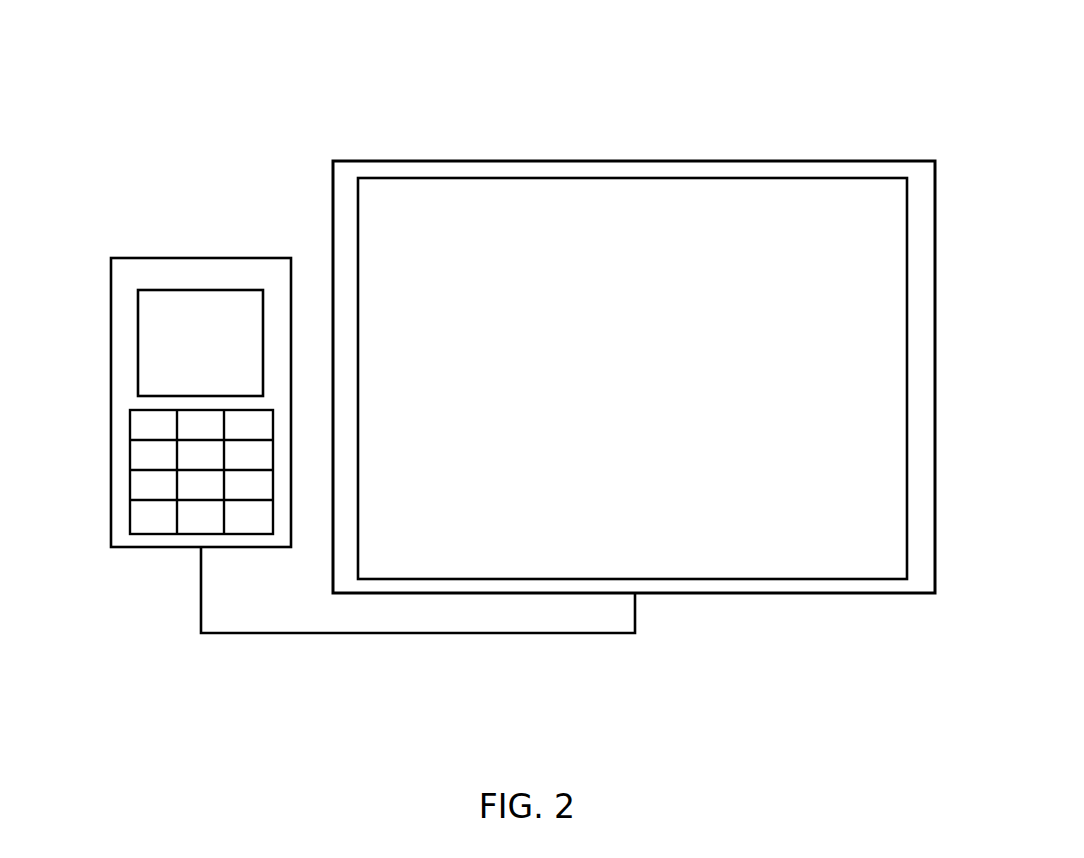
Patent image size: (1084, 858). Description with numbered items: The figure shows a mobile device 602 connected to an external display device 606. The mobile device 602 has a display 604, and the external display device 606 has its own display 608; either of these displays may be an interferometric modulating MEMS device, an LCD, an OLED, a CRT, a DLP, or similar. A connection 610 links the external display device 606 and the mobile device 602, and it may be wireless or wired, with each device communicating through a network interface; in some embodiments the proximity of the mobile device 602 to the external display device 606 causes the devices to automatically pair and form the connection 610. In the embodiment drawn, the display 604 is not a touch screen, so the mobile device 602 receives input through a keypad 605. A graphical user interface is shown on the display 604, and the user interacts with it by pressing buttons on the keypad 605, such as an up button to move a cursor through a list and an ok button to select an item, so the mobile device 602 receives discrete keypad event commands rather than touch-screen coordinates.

The mobile device 602 is at (201, 361).
The display 604 is at (244, 289).
The keypad 605 is at (130, 425).
The external display device 606 is at (634, 337).
The display 608 is at (607, 178).
The connection 610 is at (379, 634).